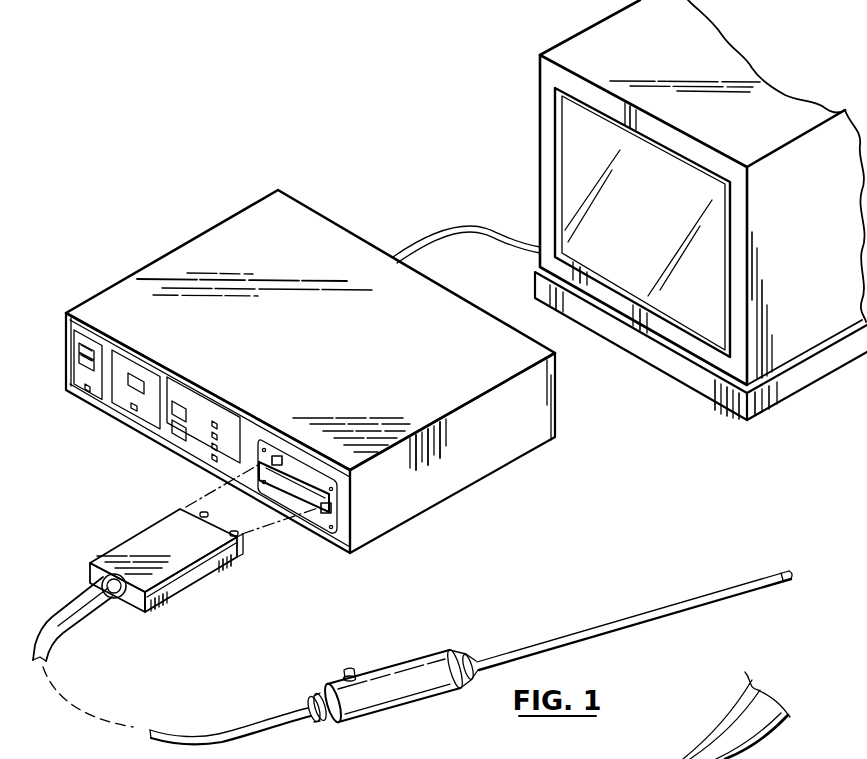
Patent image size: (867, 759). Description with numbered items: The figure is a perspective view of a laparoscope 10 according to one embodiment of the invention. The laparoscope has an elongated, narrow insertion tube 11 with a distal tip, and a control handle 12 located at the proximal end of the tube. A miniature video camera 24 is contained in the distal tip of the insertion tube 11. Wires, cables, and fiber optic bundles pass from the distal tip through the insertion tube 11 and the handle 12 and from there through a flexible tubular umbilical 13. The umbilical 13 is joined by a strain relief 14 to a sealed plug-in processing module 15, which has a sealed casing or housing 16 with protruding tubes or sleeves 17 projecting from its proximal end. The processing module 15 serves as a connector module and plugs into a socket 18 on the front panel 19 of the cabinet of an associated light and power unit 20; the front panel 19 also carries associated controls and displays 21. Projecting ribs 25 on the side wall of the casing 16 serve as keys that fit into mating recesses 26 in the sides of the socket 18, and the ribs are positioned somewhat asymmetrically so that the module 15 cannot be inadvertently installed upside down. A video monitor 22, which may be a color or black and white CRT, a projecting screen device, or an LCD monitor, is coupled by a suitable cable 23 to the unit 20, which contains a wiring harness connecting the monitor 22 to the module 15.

The laparoscope 10 is at (487, 647).
The insertion tube 11 is at (651, 610).
The control handle 12 is at (408, 657).
The flexible tubular umbilical 13 is at (225, 724).
The strain relief 14 is at (80, 619).
The sealed plug-in processing module 15 is at (143, 634).
The casing 16 is at (164, 562).
The protruding tubes or sleeves 17 is at (203, 512).
The socket 18 is at (337, 489).
The front panel 19 is at (337, 479).
The light and power unit 20 is at (700, 252).
The controls and displays 21 is at (131, 372).
The video monitor 22 is at (688, 375).
The cable 23 is at (455, 224).
The miniature video camera 24 is at (784, 578).
The projecting ribs 25 is at (89, 563).
The mating recesses 26 is at (252, 528).